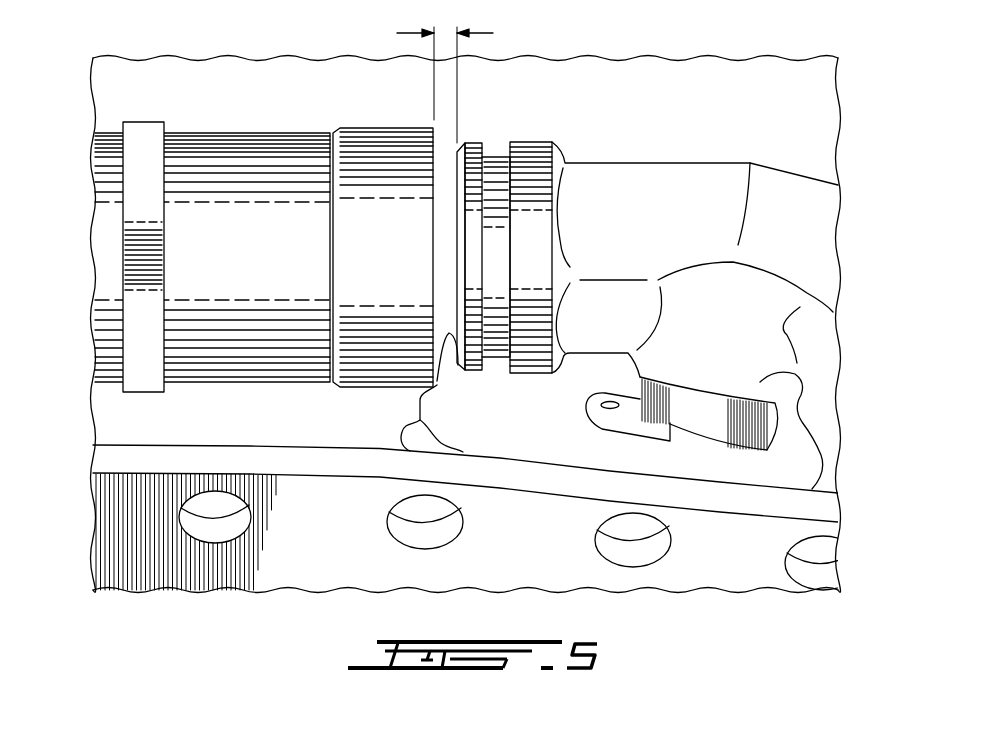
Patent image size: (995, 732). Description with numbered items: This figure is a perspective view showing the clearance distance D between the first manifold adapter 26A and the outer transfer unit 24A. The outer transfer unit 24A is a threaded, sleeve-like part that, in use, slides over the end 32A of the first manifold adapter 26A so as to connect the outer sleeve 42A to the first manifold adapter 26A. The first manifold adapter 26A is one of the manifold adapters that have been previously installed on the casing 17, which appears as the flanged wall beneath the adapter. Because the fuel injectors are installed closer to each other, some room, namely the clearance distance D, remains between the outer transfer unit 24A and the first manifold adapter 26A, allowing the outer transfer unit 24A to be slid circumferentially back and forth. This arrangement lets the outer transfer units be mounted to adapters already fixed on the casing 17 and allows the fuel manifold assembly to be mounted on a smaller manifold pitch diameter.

The casing 17 is at (815, 412).
The outer transfer unit 24A is at (229, 219).
The first manifold adapter 26A is at (640, 188).
The end 32A is at (550, 123).
The outer sleeve 42A is at (253, 340).
The clearance distance D is at (445, 73).